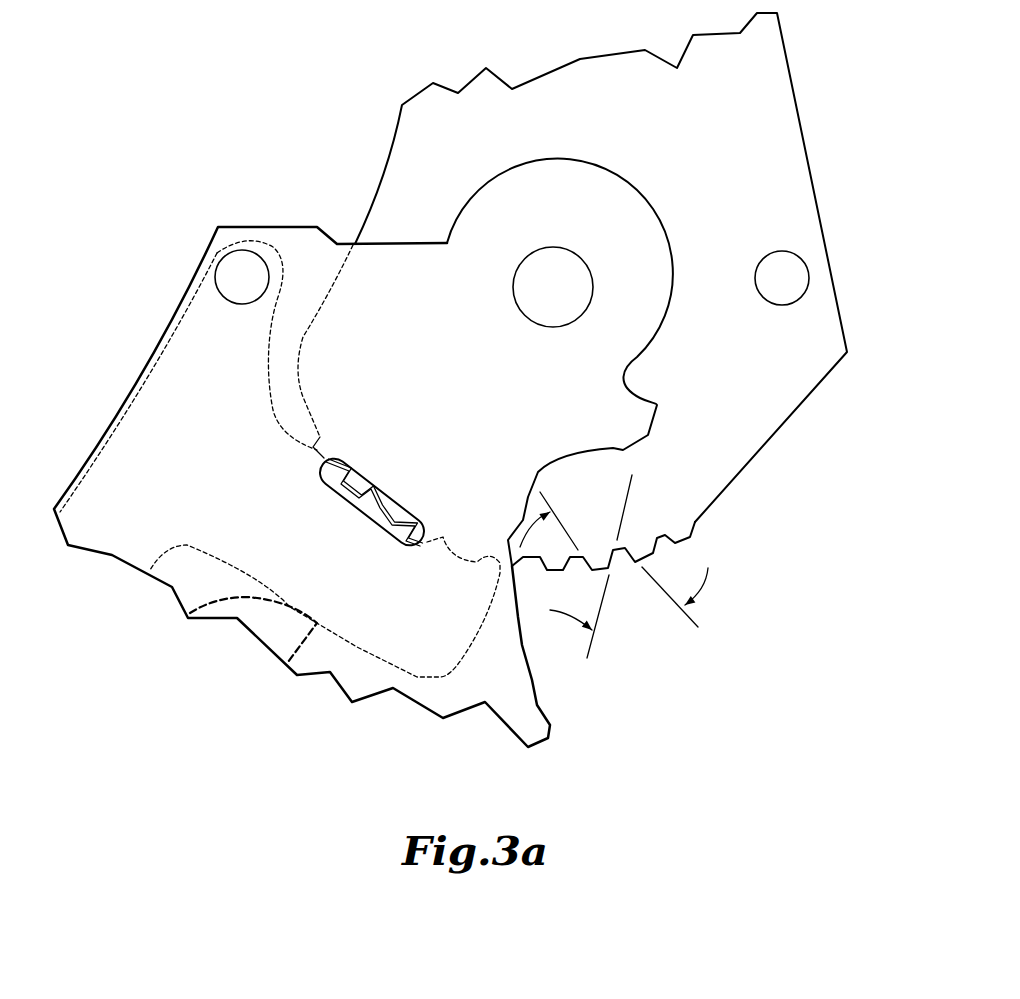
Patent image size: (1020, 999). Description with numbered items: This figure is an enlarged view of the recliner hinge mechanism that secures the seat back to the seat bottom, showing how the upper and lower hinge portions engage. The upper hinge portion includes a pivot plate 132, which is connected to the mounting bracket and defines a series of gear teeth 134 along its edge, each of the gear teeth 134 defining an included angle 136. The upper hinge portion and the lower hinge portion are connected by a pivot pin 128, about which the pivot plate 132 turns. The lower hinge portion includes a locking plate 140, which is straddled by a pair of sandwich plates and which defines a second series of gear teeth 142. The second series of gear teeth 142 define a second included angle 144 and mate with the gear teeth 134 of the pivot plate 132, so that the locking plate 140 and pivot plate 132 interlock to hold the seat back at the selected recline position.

The pivot pin 128 is at (576, 299).
The pivot plate 132 is at (773, 97).
The gear teeth 134 is at (683, 538).
The included angle 136 is at (703, 583).
The locking plate 140 is at (148, 357).
The second series of gear teeth 142 is at (367, 487).
The second included angle 144 is at (630, 501).